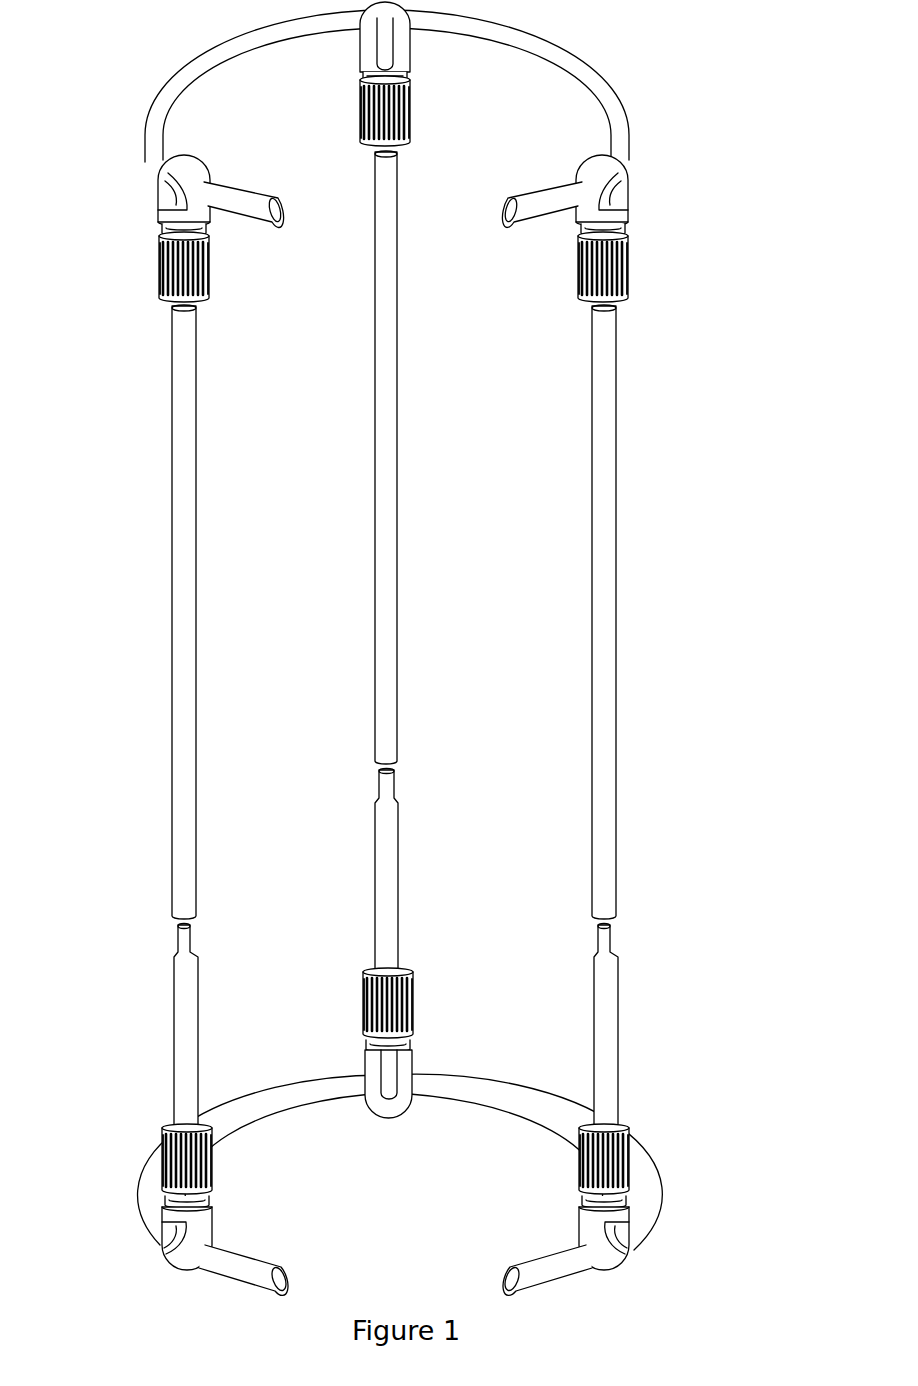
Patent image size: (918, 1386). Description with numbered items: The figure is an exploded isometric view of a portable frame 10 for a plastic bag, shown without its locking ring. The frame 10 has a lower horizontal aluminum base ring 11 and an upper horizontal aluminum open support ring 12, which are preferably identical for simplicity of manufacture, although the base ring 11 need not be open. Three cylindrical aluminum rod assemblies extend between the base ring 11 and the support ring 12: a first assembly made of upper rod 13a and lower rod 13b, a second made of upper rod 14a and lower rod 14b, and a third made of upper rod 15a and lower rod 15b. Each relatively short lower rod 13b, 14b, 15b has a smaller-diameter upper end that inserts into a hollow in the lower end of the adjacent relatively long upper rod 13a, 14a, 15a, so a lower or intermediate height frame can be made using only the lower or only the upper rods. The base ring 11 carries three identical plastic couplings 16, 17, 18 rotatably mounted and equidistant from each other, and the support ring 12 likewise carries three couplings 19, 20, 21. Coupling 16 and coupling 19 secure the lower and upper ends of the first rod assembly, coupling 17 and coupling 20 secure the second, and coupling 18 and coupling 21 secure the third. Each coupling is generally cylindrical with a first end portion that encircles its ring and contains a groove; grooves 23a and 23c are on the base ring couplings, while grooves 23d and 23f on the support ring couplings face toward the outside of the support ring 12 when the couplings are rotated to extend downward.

The portable frame 10 is at (82, 625).
The base ring 11 is at (652, 1188).
The support ring 12 is at (632, 95).
The upper rod 13a is at (209, 630).
The lower rod 13b is at (209, 1023).
The upper rod 14a is at (404, 630).
The lower rod 14b is at (404, 890).
The upper rod 15a is at (628, 630).
The lower rod 15b is at (626, 1028).
The coupling 16 is at (162, 1140).
The coupling 17 is at (420, 1010).
The coupling 18 is at (577, 1182).
The coupling 19 is at (159, 268).
The coupling 20 is at (358, 106).
The coupling 21 is at (634, 265).
The groove 23a is at (157, 1233).
The groove 23c is at (638, 1237).
The groove 23d is at (172, 197).
The groove 23f is at (630, 192).